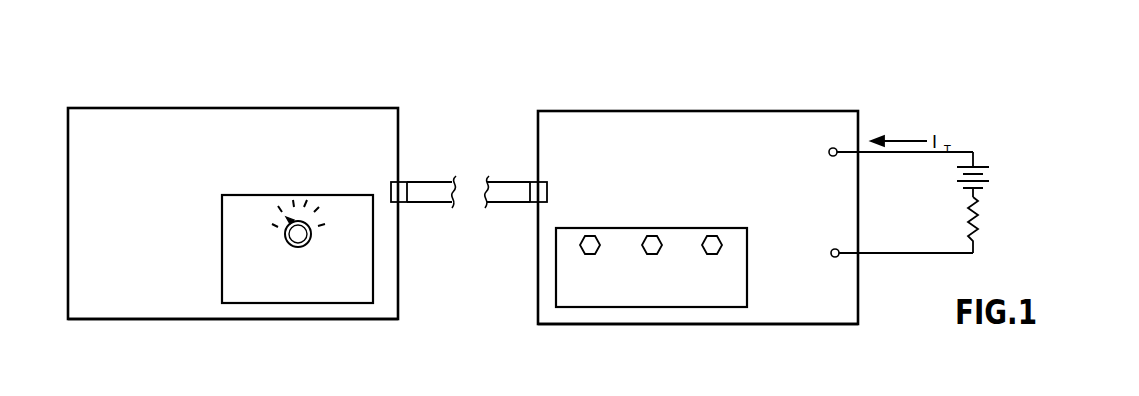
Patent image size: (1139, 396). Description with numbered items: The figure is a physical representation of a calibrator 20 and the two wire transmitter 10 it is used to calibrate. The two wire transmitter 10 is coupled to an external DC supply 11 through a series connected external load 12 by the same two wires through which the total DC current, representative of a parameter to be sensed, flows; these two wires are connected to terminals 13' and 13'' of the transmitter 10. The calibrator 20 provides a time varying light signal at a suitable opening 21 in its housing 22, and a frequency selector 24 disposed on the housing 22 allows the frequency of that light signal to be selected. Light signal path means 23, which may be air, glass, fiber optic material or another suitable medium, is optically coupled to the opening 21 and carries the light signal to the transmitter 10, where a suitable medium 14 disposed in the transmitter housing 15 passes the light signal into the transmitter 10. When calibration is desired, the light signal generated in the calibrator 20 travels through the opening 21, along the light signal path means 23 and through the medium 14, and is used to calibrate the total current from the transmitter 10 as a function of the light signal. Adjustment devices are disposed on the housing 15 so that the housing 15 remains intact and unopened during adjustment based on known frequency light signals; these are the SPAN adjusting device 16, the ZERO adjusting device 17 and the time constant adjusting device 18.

The two wire transmitter 10 is at (697, 108).
The external DC supply 11 is at (990, 173).
The external load 12 is at (983, 224).
The terminal 13' is at (901, 117).
The terminal 13'' is at (902, 279).
The medium 14 is at (533, 204).
The housing 15 is at (770, 325).
The SPAN adjusting device 16 is at (592, 235).
The ZERO adjusting device 17 is at (654, 235).
The time constant adjusting device 18 is at (713, 235).
The calibrator 20 is at (292, 104).
The opening 21 is at (398, 181).
The housing 22 is at (327, 320).
The light signal path means 23 is at (433, 181).
The frequency selector 24 is at (222, 276).